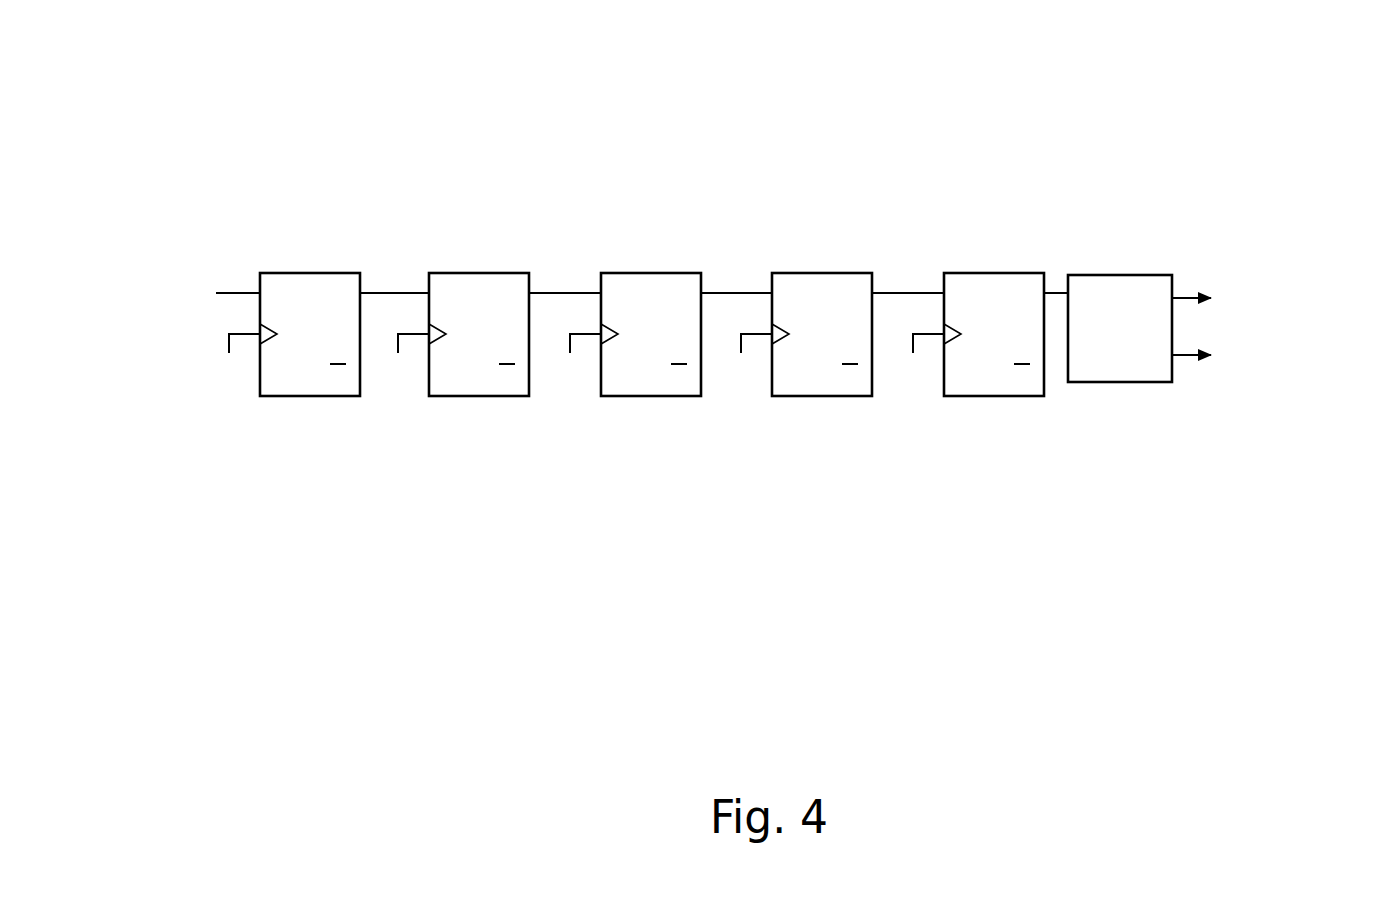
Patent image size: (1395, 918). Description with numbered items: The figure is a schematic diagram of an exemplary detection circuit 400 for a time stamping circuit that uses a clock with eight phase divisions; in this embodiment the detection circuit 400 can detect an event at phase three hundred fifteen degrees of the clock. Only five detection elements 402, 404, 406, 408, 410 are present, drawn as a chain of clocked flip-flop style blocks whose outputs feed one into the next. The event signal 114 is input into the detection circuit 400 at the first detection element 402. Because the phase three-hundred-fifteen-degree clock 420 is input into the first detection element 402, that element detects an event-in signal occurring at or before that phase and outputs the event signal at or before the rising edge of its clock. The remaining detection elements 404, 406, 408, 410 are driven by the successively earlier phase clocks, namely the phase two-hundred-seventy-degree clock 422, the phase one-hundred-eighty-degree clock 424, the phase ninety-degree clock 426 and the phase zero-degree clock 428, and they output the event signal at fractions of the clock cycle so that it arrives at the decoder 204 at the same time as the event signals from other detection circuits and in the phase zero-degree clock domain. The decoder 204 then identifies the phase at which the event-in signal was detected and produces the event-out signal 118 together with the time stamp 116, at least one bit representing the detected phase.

The detection circuit 400 is at (209, 92).
The first detection element 402 is at (307, 273).
The detection element 404 is at (480, 273).
The detection element 406 is at (650, 273).
The detection element 408 is at (820, 273).
The detection element 410 is at (990, 273).
The decoder 204 is at (1120, 275).
The event signal 114 is at (164, 312).
The time stamp 116 is at (1298, 374).
The event-out signal 118 is at (1270, 279).
The phase 315° clock 420 is at (232, 558).
The phase 270° clock 422 is at (400, 558).
The phase 180° clock 424 is at (572, 558).
The phase 90° clock 426 is at (745, 550).
The phase 0° clock 428 is at (915, 543).